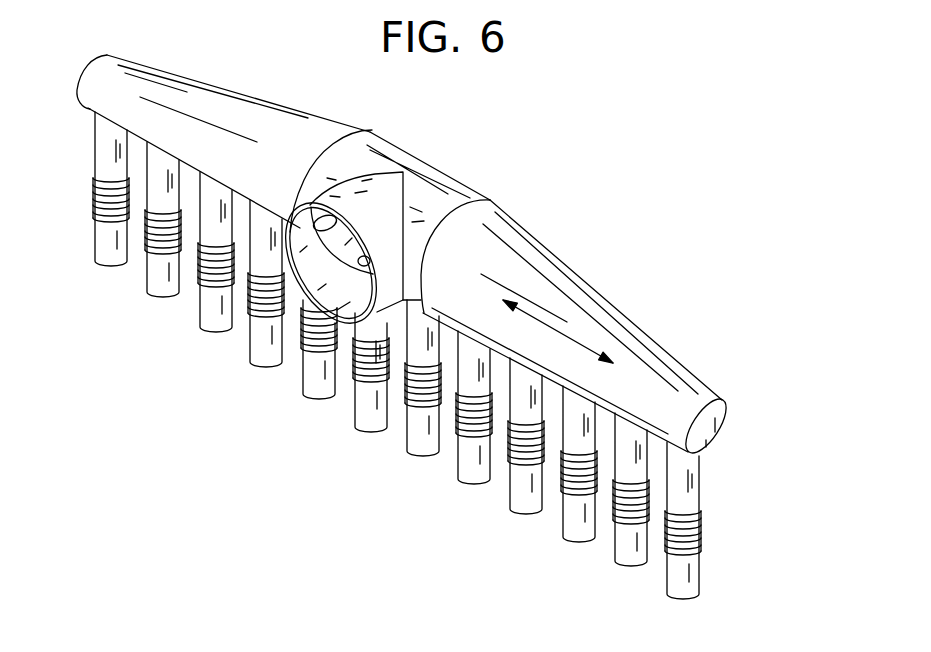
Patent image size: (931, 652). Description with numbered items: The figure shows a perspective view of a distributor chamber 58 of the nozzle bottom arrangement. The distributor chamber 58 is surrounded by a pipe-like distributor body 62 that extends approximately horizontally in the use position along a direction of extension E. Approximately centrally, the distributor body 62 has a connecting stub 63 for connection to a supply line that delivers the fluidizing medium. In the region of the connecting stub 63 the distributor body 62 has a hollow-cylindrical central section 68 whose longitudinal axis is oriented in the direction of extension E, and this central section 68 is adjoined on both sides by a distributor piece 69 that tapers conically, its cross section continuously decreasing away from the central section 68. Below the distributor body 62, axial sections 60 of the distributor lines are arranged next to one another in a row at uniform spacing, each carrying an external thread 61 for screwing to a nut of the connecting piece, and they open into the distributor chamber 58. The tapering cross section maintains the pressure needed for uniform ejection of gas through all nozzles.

The distributor chamber 58 is at (558, 280).
The axial sections 60 is at (103, 145).
The external thread 61 is at (97, 195).
The distributor body 62 is at (329, 130).
The connecting stub 63 is at (375, 186).
The central section 68 is at (462, 186).
The distributor piece 69 is at (200, 97).
The direction of extension E is at (571, 335).